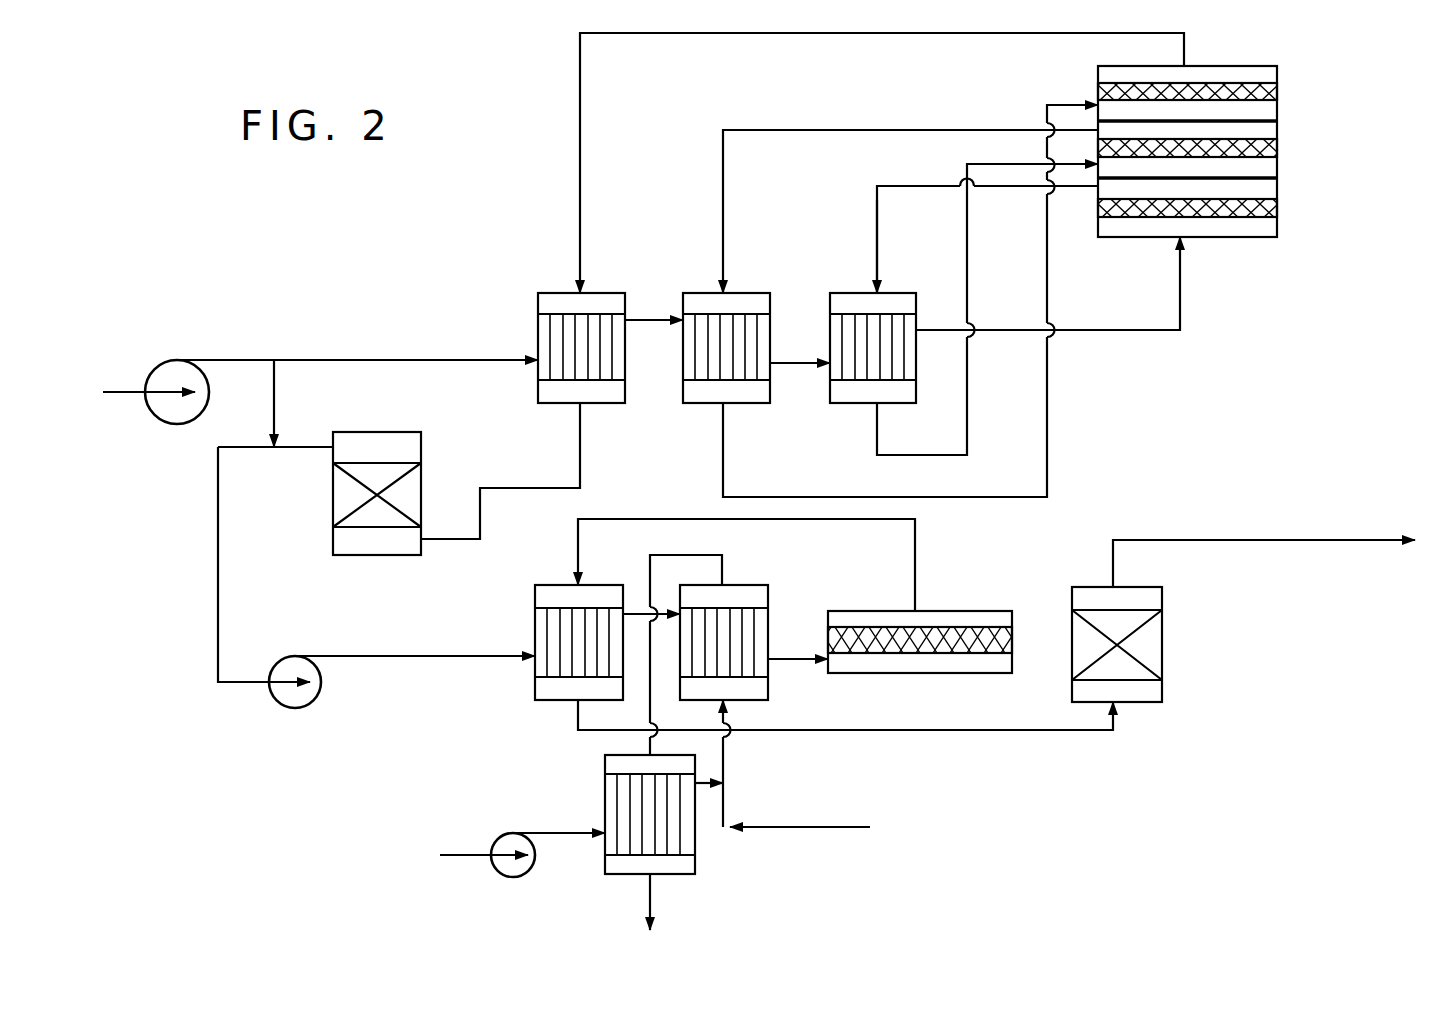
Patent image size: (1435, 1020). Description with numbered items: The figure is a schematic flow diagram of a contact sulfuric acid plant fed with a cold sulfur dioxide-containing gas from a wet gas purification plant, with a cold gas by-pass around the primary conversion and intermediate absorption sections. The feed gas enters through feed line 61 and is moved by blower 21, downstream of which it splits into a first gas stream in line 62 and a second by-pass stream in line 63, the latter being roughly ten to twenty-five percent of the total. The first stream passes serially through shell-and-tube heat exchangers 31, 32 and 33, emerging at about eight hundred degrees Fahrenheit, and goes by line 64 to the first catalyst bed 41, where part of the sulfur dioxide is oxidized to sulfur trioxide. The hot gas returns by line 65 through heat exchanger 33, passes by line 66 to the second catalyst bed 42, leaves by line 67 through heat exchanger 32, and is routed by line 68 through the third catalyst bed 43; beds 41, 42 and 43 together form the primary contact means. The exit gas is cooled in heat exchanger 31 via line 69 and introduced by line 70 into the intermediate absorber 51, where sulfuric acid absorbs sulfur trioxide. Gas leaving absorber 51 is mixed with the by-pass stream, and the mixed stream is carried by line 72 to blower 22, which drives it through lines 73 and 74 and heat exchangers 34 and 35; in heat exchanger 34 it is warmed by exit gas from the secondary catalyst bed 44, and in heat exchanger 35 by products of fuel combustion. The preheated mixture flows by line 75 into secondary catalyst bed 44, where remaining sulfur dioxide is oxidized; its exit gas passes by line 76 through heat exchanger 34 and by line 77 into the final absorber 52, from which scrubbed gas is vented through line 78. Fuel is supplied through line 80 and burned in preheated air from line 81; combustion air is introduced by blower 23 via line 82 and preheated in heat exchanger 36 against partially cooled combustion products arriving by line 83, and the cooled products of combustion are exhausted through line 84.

The blower 21 is at (173, 376).
The blower 22 is at (290, 693).
The blower 23 is at (503, 871).
The heat exchanger 31 is at (603, 300).
The heat exchanger 32 is at (748, 300).
The heat exchanger 33 is at (893, 300).
The heat exchanger 34 is at (557, 595).
The heat exchanger 35 is at (745, 602).
The heat exchanger 36 is at (612, 765).
The first catalyst bed 41 is at (1277, 206).
The second catalyst bed 42 is at (1277, 147).
The third catalyst bed 43 is at (1277, 90).
The secondary catalyst bed 44 is at (1012, 637).
The intermediate absorber 51 is at (400, 441).
The final absorber 52 is at (1152, 598).
The feed line 61 is at (120, 391).
The line 62 is at (378, 358).
The line 63 is at (277, 396).
The line 64 is at (1183, 296).
The line 65 is at (893, 186).
The line 66 is at (968, 398).
The line 67 is at (810, 131).
The line 68 is at (1049, 437).
The line 69 is at (885, 35).
The line 70 is at (583, 440).
The line 72 is at (221, 552).
The line 73 is at (466, 658).
The line 74 is at (637, 610).
The line 75 is at (790, 658).
The line 76 is at (915, 563).
The line 77 is at (971, 738).
The line 78 is at (1212, 538).
The line 80 is at (822, 830).
The line 81 is at (700, 787).
The line 82 is at (570, 832).
The line 83 is at (725, 563).
The line 84 is at (652, 895).